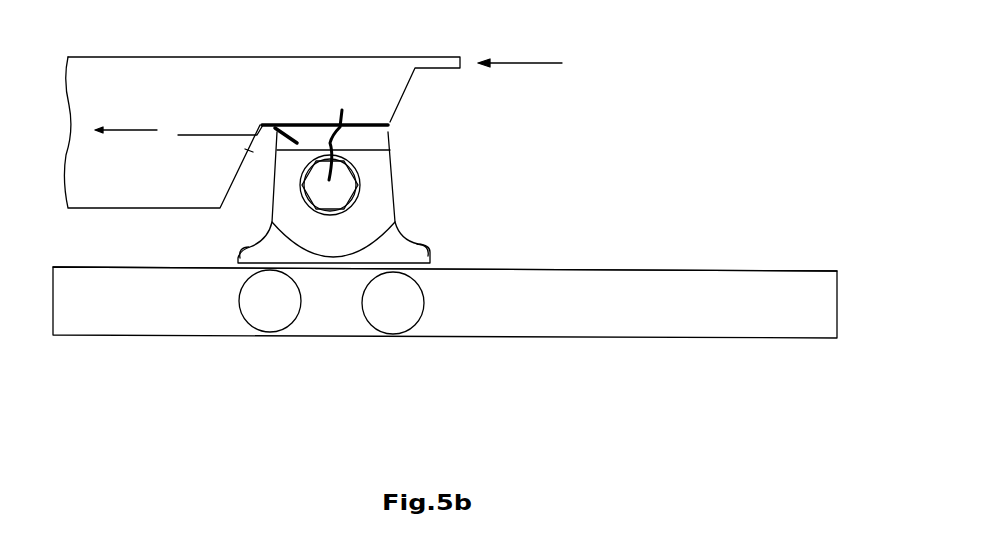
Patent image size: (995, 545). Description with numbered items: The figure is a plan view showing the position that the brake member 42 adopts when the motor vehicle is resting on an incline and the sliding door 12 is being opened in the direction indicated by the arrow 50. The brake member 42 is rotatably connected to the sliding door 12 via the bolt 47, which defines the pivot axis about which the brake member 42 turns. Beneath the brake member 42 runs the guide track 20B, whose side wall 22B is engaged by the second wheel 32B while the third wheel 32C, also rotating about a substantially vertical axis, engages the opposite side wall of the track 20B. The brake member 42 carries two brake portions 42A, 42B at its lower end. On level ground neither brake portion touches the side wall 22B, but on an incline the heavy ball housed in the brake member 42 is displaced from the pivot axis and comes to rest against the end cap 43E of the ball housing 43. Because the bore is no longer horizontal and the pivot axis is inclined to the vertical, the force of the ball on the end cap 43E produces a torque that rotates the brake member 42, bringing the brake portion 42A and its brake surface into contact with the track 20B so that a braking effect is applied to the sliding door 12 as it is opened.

The sliding door 12 is at (232, 85).
The plate 43 is at (276, 125).
The end cap 43E is at (178, 135).
The bolt 47 is at (342, 110).
The arrow 50 is at (513, 62).
The brake member 42 is at (400, 200).
The brake portion 42A is at (243, 252).
The brake portion 42B is at (413, 246).
The side wall 22B is at (553, 270).
The guide track 20B is at (653, 313).
The second wheel 32B is at (265, 308).
The third wheel 32C is at (400, 310).